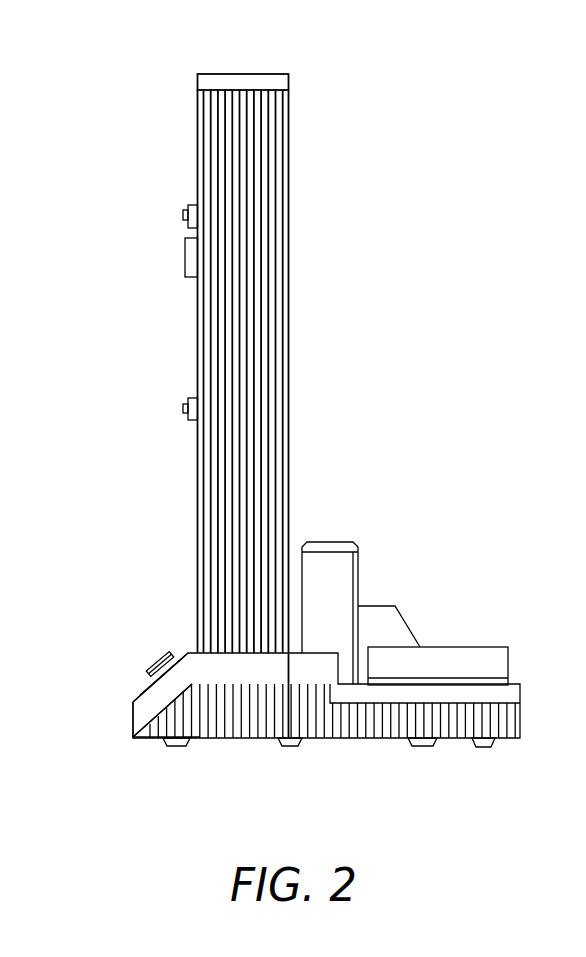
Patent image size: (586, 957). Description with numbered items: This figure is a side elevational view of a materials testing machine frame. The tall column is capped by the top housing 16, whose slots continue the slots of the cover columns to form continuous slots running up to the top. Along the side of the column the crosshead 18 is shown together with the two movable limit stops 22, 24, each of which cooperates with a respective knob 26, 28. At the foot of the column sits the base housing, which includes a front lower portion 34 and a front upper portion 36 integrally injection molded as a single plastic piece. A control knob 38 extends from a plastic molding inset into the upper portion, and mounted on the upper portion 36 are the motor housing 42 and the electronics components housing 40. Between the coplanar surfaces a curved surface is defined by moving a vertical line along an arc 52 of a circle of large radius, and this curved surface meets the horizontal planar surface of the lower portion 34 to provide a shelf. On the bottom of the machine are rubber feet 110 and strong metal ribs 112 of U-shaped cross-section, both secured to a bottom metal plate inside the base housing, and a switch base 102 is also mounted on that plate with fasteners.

The top housing 16 is at (242, 80).
The crosshead 18 is at (188, 258).
The movable limit stop 22 is at (197, 206).
The movable limit stop 24 is at (188, 400).
The knob 26 is at (183, 216).
The knob 28 is at (183, 408).
The front lower portion 34 is at (133, 737).
The front upper portion 36 is at (133, 700).
The control knob 38 is at (156, 655).
The electronics components housing 40 is at (385, 623).
The motor housing 42 is at (343, 563).
The arc 52 is at (143, 692).
The switch base 102 is at (325, 748).
The rubber feet 110 is at (176, 747).
The ribs 112 is at (288, 748).